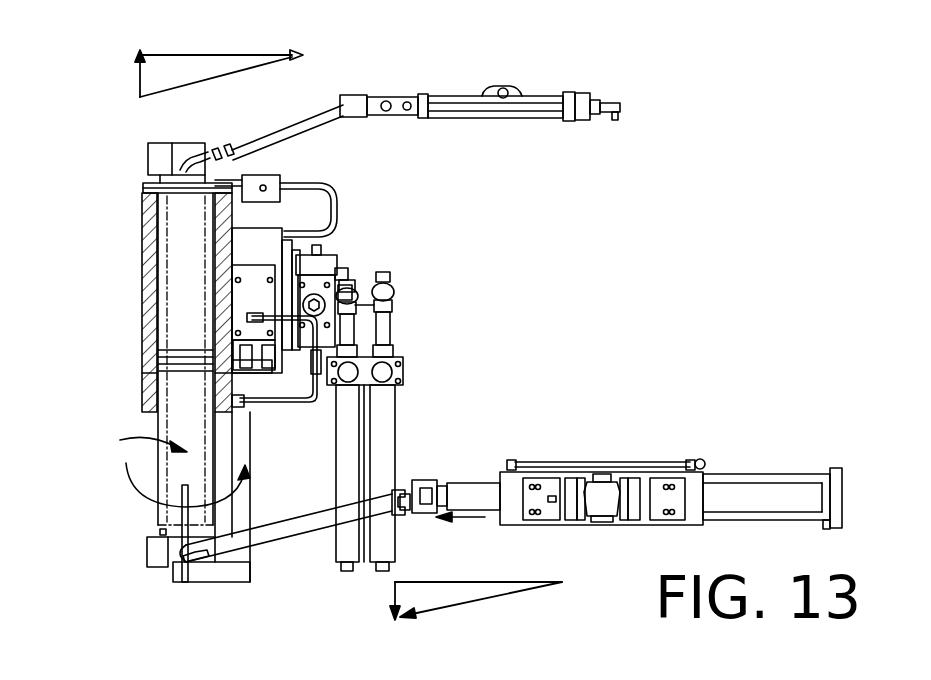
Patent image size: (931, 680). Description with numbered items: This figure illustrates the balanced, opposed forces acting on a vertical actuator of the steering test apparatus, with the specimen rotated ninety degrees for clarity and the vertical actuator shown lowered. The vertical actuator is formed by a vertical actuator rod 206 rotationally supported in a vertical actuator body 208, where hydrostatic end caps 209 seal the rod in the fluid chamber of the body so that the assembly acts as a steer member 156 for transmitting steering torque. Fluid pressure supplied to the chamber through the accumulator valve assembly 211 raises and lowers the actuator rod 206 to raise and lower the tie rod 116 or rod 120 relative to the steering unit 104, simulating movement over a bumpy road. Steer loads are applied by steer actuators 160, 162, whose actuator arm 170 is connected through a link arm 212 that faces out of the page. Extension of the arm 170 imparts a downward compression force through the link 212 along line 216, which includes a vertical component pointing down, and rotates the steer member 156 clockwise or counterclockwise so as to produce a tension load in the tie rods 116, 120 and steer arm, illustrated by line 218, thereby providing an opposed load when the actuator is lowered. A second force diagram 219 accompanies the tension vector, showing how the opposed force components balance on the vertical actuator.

The steering unit 104 is at (535, 78).
The tie rod 116 is at (320, 133).
The rod 120 is at (314, 128).
The steer member 156 is at (166, 470).
The steer actuator 160 is at (671, 472).
The steer actuator 162 is at (600, 443).
The actuator arm 170 is at (452, 478).
The vertical actuator rod 206 is at (172, 250).
The vertical actuator body 208 is at (152, 362).
The hydrostatic end cap 209 is at (143, 191).
The accumulator valve assembly 211 is at (389, 300).
The link arm 212 is at (286, 552).
The compression force line 216 is at (432, 610).
The tension load line 218 is at (177, 88).
The tensile force vector diagram 219 is at (197, 76).